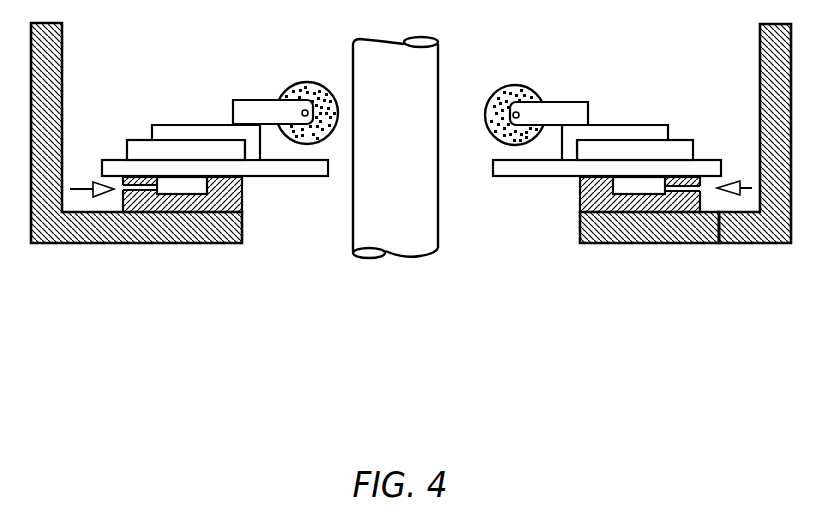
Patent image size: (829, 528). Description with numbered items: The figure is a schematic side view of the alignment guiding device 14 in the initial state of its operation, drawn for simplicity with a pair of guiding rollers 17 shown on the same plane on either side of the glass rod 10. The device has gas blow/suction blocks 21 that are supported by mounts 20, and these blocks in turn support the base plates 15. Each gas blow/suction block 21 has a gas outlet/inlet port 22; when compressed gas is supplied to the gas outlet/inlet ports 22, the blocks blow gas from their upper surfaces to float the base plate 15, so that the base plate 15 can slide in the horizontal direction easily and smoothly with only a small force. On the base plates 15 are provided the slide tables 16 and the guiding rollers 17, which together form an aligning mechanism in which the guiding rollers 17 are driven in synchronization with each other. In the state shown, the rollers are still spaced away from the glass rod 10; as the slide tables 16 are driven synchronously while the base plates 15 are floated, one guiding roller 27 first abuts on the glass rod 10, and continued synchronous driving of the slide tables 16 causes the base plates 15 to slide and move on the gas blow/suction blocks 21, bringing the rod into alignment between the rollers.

The alignment guiding device 14 is at (87, 90).
The guiding roller 27 is at (296, 82).
The glass rod 10 is at (383, 91).
The guiding roller 17 is at (517, 85).
The slide table 16 is at (655, 125).
The mount 20 is at (760, 63).
The base plate 15 is at (527, 177).
The gas blow/suction block 21 is at (580, 192).
The gas outlet/inlet port 22 is at (700, 187).